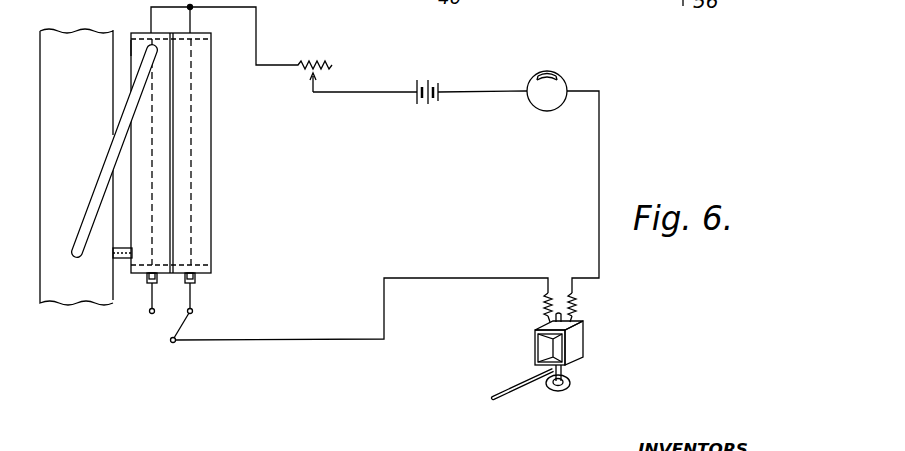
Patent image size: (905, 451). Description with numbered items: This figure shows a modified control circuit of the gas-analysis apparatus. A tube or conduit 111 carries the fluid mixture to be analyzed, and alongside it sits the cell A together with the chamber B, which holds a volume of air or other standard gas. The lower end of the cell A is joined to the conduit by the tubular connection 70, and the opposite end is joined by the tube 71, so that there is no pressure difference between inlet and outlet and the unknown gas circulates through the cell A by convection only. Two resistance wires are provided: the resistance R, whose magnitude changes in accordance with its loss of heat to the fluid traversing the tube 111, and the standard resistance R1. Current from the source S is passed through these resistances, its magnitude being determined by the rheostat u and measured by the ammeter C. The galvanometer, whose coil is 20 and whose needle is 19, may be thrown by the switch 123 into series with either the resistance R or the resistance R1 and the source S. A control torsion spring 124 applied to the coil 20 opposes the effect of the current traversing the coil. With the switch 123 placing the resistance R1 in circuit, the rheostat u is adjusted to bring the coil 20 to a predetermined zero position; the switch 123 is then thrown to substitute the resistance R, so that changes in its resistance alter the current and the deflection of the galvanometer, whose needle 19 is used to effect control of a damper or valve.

The cell A is at (131, 56).
The chamber B is at (211, 114).
The resistance wire R is at (154, 156).
The standard resistance R1 is at (191, 203).
The tube 71 is at (95, 212).
The tube or conduit 111 is at (46, 281).
The tubular connection 70 is at (125, 260).
The switch 123 is at (184, 320).
The rheostat u is at (331, 62).
The source of current S is at (427, 103).
The ammeter C is at (545, 111).
The galvanometer coil 20 is at (575, 345).
The galvanometer needle 19 is at (523, 379).
The control torsion spring 124 is at (561, 395).